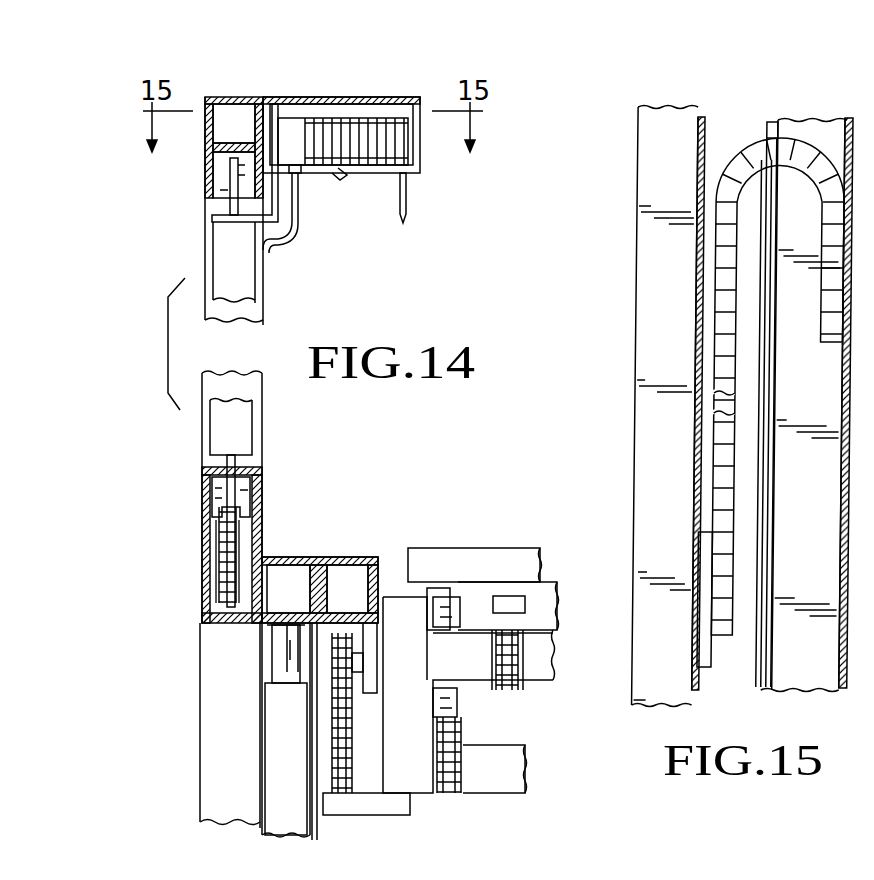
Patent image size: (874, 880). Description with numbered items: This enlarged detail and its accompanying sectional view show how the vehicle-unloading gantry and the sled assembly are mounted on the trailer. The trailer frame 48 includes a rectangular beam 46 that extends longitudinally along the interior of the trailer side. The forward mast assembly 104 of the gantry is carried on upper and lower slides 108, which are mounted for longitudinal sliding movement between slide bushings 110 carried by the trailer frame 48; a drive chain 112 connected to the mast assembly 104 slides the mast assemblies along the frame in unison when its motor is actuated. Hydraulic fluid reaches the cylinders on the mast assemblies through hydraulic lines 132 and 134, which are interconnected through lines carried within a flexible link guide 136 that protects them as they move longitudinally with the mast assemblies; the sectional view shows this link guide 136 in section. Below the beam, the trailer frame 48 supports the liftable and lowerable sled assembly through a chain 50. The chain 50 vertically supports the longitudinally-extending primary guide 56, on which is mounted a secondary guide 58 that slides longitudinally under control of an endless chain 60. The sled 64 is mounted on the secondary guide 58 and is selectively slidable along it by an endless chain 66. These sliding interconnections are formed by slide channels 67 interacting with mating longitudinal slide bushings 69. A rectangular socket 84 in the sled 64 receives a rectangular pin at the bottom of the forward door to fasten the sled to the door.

In FIG. 14, the rectangular beam 46 is at (343, 557).
In FIG. 14, the trailer frame 48 is at (247, 97).
In FIG. 15, the trailer frame 48 is at (638, 385).
In FIG. 14, the chain 50 is at (330, 757).
In FIG. 14, the primary guide 56 is at (405, 775).
In FIG. 14, the secondary guide 58 is at (478, 665).
In FIG. 14, the endless chain 60 is at (470, 770).
In FIG. 14, the sled 64 is at (503, 548).
In FIG. 14, the endless chain 66 is at (525, 662).
In FIG. 14, the slide channel 67 is at (427, 610).
In FIG. 14, the slide bushing 69 is at (454, 610).
In FIG. 14, the rectangular socket 84 is at (515, 604).
In FIG. 14, the mast assembly 104 is at (245, 436).
In FIG. 14, the slide 108 is at (227, 210).
In FIG. 14, the slide bushing 110 is at (218, 165).
In FIG. 14, the drive chain 112 is at (222, 579).
In FIG. 14, the hydraulic line 132 is at (407, 195).
In FIG. 14, the hydraulic line 134 is at (300, 222).
In FIG. 14, the flexible link guide 136 is at (407, 118).
In FIG. 15, the flexible link guide 136 is at (748, 150).